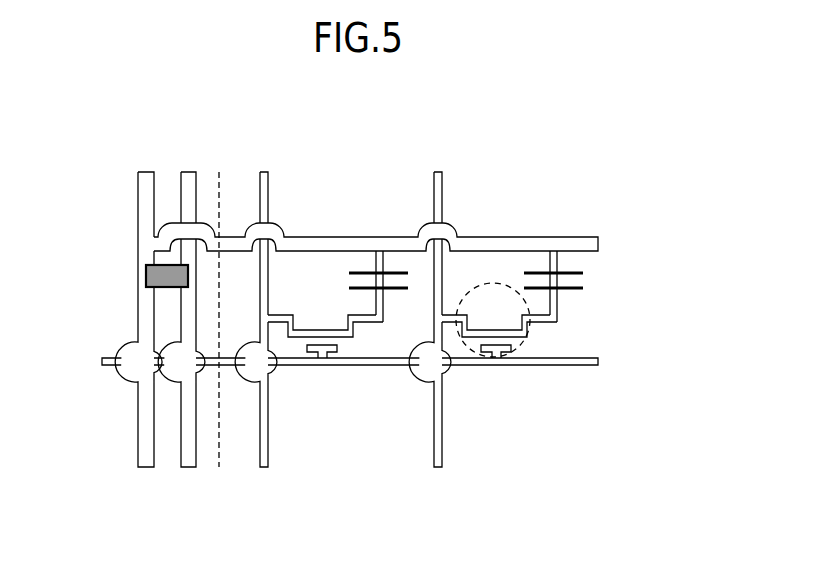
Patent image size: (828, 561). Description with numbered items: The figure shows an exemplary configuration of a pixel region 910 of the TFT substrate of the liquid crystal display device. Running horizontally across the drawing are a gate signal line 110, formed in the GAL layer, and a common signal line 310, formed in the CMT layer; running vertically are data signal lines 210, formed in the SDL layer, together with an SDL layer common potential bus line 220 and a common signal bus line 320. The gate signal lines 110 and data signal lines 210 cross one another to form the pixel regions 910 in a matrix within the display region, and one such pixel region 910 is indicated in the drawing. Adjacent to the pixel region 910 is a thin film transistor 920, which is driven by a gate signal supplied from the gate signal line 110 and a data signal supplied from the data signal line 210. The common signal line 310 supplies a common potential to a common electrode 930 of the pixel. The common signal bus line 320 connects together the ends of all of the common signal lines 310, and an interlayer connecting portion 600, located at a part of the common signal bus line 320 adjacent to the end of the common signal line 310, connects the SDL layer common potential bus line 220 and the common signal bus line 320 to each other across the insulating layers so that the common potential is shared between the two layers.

The gate signal line 110 is at (587, 366).
The data signal line 210 is at (443, 180).
The SDL layer common potential bus line 220 is at (188, 172).
The common signal line 310 is at (552, 236).
The common signal bus line 320 is at (138, 187).
The interlayer connecting portion 600 is at (146, 277).
The pixel region 910 is at (559, 231).
The thin film transistor 920 is at (535, 322).
The common electrode 930 is at (578, 273).